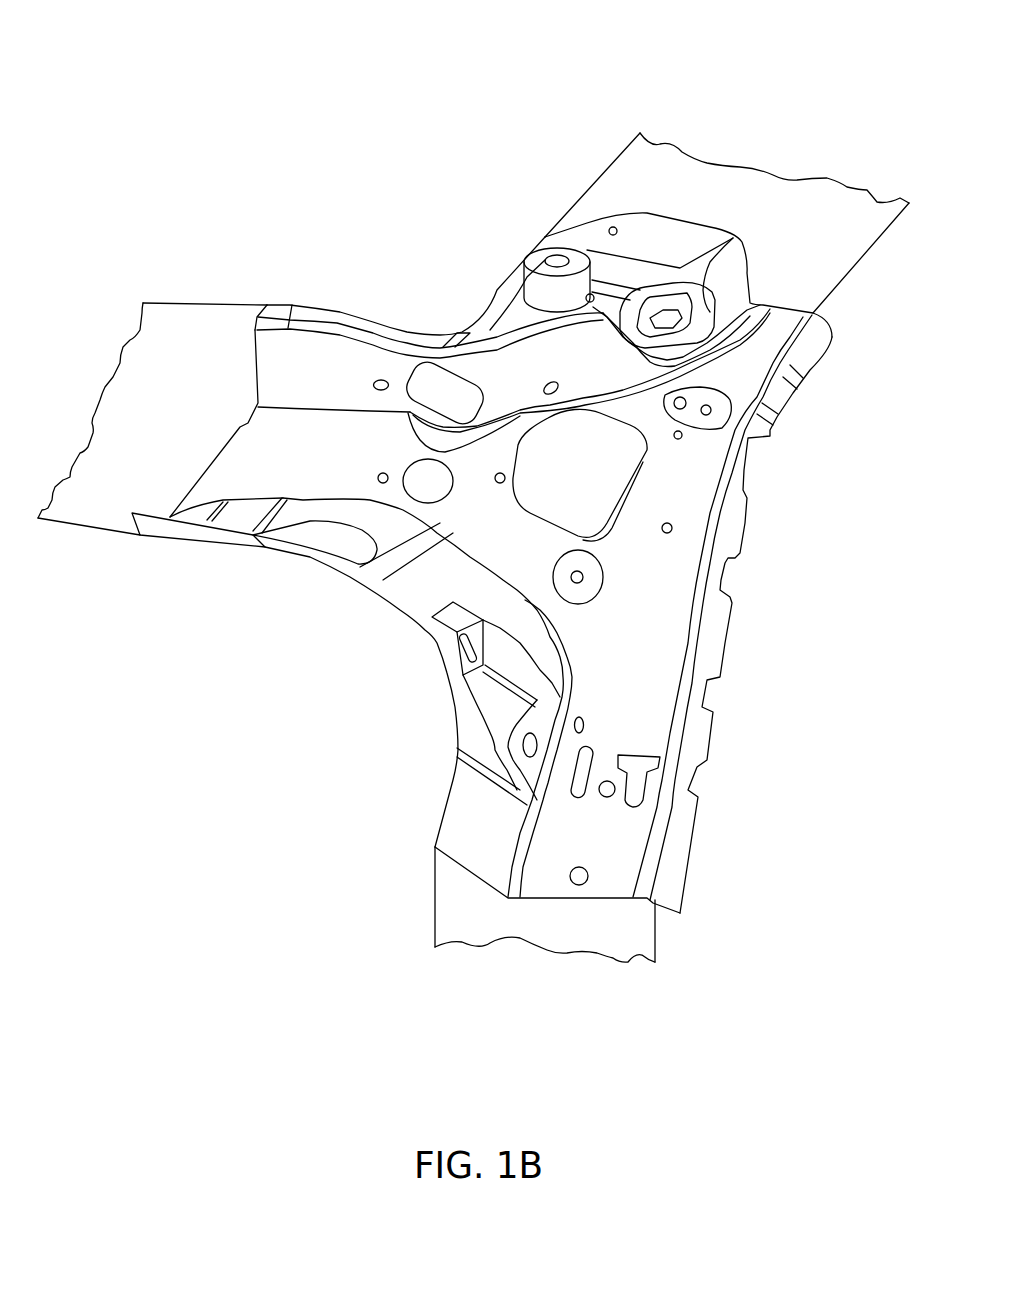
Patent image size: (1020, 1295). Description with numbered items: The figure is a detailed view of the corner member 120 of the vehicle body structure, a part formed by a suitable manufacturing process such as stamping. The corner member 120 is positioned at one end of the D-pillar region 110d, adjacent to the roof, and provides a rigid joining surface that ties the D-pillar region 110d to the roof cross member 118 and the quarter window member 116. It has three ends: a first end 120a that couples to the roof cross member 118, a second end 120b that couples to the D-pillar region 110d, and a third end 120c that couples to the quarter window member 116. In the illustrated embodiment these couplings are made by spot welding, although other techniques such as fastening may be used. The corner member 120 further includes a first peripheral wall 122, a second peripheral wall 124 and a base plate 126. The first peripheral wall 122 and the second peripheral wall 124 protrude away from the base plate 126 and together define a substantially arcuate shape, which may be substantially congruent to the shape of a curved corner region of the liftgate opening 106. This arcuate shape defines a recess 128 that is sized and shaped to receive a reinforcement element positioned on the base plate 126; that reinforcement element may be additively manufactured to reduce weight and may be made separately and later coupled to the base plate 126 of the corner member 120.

The corner member 120 is at (724, 57).
The first end 120a is at (786, 302).
The second end 120b is at (467, 880).
The third end 120c is at (245, 355).
The roof cross member 118 is at (647, 168).
The quarter window member 116 is at (100, 420).
The D-pillar region 110d is at (640, 932).
The first peripheral wall 122 is at (482, 366).
The second peripheral wall 124 is at (223, 537).
The liftgate opening 106 is at (418, 622).
The recess 128 is at (672, 481).
The base plate 126 is at (640, 571).